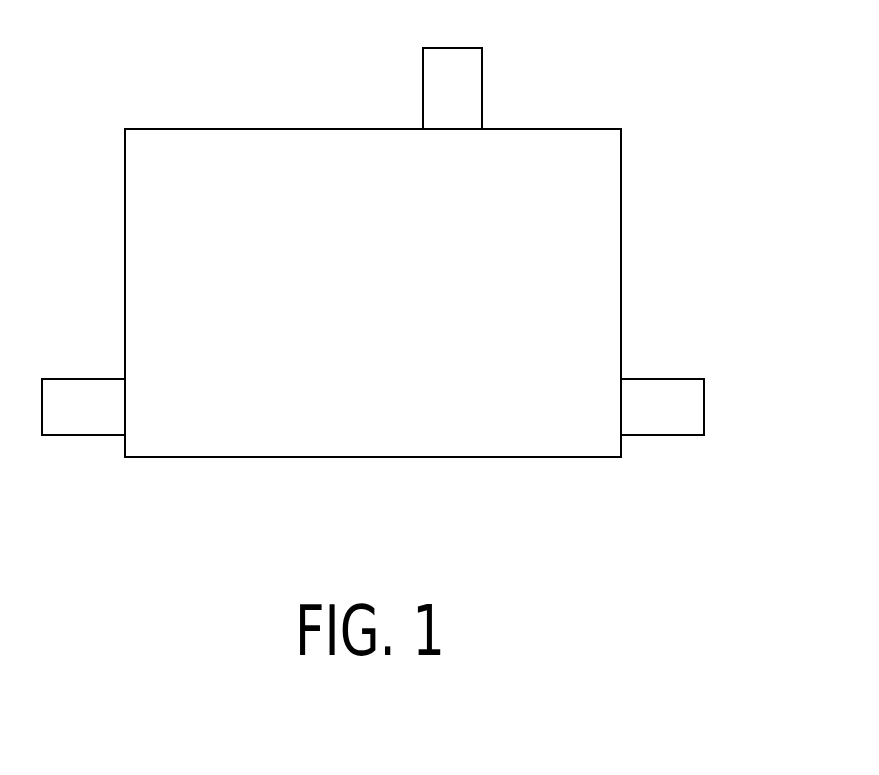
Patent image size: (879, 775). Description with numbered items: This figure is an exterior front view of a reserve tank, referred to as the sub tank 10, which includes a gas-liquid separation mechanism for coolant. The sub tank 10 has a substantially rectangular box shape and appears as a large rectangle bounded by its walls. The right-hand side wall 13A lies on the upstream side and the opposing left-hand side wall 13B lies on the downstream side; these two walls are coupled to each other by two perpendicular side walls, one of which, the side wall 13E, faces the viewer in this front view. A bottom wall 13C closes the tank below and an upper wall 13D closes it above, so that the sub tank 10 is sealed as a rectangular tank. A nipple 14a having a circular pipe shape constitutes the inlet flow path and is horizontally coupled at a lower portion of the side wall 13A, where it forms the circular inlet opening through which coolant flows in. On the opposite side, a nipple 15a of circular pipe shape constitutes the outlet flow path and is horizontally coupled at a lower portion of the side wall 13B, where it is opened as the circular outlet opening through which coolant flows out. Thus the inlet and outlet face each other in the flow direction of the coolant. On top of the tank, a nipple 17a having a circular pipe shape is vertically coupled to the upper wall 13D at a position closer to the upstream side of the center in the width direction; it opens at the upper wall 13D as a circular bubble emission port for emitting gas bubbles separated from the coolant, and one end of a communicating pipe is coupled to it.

The sub tank 10 is at (589, 99).
The side wall 13A is at (622, 230).
The side wall 13B is at (124, 229).
The bottom wall 13C is at (436, 458).
The upper wall 13D is at (215, 129).
The side wall 13E is at (230, 432).
The nipple 14a is at (688, 378).
The nipple 15a is at (80, 378).
The nipple 17a is at (484, 84).